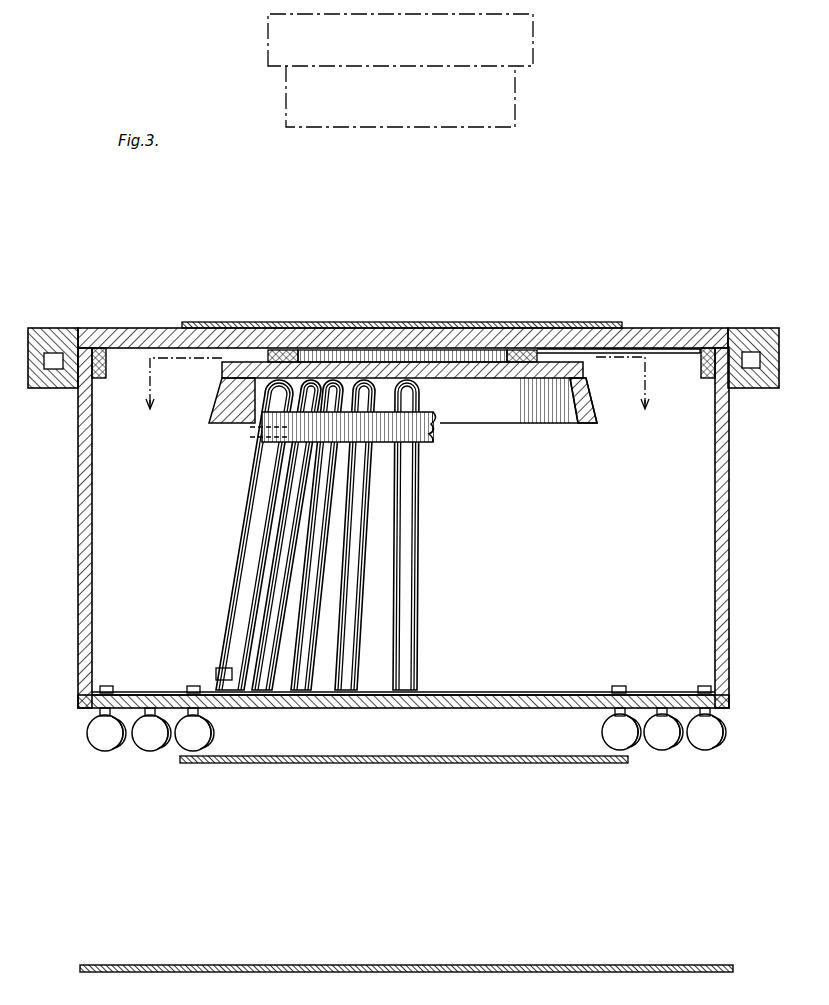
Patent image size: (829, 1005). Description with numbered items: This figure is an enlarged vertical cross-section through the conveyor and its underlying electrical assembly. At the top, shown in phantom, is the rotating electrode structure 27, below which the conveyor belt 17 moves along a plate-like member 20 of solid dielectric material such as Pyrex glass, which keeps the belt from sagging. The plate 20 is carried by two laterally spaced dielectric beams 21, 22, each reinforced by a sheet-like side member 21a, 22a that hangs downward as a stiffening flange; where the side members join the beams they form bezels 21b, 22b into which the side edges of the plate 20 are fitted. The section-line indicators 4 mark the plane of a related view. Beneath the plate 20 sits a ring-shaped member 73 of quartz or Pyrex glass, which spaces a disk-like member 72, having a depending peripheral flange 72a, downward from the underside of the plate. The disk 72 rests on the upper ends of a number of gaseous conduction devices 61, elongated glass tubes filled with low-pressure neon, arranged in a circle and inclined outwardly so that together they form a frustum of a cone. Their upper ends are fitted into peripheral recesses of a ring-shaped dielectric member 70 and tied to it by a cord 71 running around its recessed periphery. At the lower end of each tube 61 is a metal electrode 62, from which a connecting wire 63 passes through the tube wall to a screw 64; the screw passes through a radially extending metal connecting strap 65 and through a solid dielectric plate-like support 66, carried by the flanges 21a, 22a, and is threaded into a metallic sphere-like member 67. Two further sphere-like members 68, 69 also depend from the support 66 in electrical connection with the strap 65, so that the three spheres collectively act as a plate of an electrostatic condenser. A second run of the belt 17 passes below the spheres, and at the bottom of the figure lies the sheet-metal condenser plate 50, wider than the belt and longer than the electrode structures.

The rotating electrode structure 27 is at (515, 105).
The plate-like member 20 is at (146, 331).
The beam 21 is at (70, 308).
The side member 21a is at (84, 532).
The bezel 21b is at (82, 349).
The beam 22 is at (757, 331).
The side member 22a is at (713, 491).
The bezel 22b is at (722, 347).
The section line indicator 4 is at (395, 397).
The conveyor belt 17 is at (331, 322).
The ring-shaped member 73 is at (283, 351).
The disk-like member 72 is at (503, 372).
The depending peripheral flange 72a is at (573, 408).
The cord 71 is at (252, 426).
The ring-shaped solid dielectric member 70 is at (434, 441).
The gaseous conduction device 61 is at (275, 586).
The electrode 62 is at (225, 674).
The connecting wire 63 is at (205, 688).
The screw 64 is at (105, 686).
The connecting strap 65 is at (172, 696).
The solid dielectric plate-like support 66 is at (341, 708).
The sphere-like member 67 is at (195, 753).
The sphere-like member 68 is at (149, 743).
The sphere-like member 69 is at (98, 746).
The condenser plate 50 is at (471, 965).